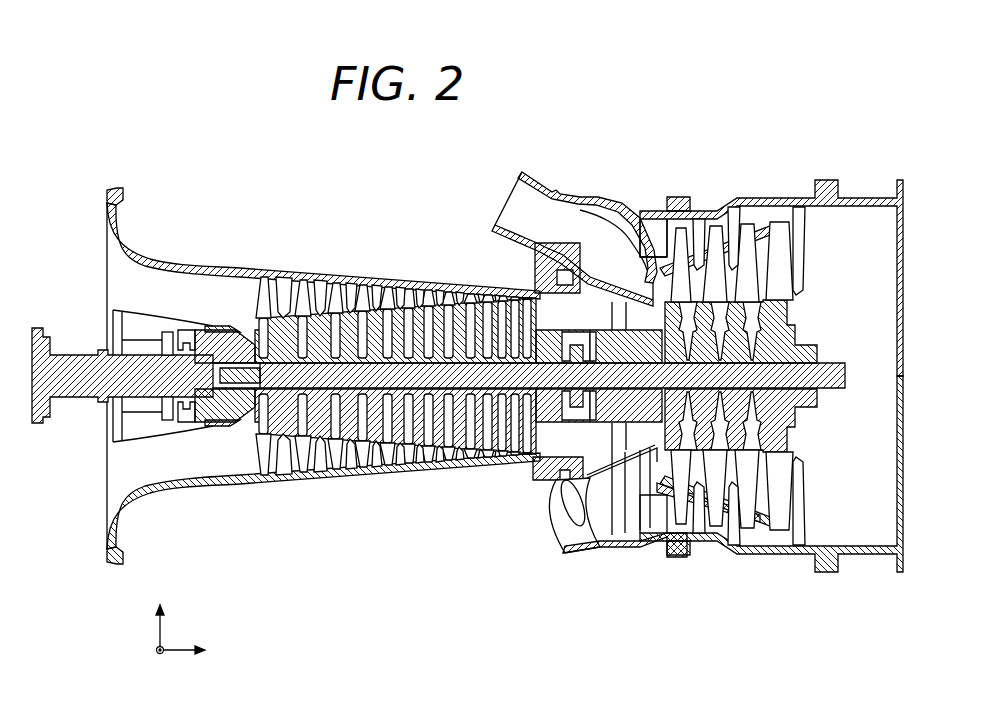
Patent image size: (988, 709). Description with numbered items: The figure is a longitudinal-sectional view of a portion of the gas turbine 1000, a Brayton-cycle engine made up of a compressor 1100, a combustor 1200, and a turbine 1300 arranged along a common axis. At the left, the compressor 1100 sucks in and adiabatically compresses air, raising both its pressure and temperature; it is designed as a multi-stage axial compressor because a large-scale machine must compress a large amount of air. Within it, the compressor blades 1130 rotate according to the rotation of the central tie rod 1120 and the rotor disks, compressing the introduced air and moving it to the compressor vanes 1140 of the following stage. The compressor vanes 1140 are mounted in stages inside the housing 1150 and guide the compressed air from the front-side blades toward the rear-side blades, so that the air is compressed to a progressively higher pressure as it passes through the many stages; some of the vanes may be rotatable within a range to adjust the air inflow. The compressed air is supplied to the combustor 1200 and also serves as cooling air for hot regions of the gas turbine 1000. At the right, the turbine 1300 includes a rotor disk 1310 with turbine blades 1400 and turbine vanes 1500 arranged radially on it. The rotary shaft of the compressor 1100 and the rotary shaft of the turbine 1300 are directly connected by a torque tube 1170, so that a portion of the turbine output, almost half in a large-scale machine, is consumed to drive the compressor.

The gas turbine 1000 is at (201, 82).
The compressor 1100 is at (343, 487).
The central tie rod 1120 is at (433, 472).
The compressor blades 1130 is at (265, 288).
The compressor vanes 1140 is at (290, 287).
The housing 1150 is at (392, 284).
The torque tube 1170 is at (595, 423).
The combustor 1200 is at (528, 168).
The turbine 1300 is at (702, 448).
The rotor disk 1310 is at (795, 317).
The turbine blades 1400 is at (737, 267).
The turbine vanes 1500 is at (718, 267).